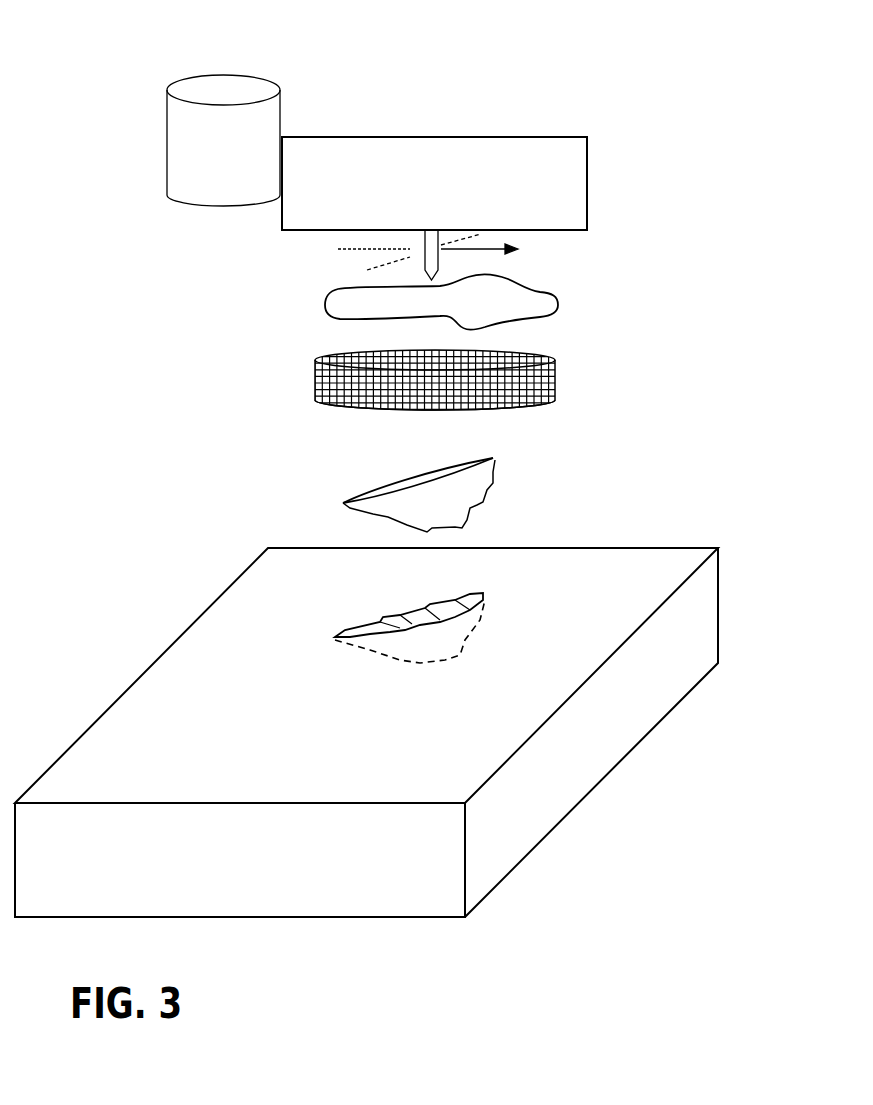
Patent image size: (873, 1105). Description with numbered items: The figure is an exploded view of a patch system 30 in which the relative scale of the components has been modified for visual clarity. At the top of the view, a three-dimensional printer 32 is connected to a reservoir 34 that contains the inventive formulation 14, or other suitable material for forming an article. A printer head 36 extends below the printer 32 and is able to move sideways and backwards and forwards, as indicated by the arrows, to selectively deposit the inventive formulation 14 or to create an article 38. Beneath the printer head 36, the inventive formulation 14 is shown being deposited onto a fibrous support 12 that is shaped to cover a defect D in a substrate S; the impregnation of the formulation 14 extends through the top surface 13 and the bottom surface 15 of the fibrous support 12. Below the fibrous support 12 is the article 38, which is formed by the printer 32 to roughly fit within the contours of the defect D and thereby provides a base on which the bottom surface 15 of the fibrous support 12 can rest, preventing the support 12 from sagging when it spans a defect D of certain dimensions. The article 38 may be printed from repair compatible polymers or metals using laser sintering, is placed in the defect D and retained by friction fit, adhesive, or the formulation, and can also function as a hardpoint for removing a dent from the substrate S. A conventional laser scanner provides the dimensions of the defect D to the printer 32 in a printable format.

The patch system 30 is at (718, 96).
The three-dimensional (3D) printer 32 is at (587, 183).
The reservoir 34 is at (167, 115).
The printer head 36 is at (413, 264).
The inventive formulation 14 is at (562, 306).
The top surface 13 is at (557, 361).
The fibrous support 12 is at (557, 380).
The bottom surface 15 is at (557, 400).
The article 38 is at (488, 492).
The defect D is at (480, 613).
The substrate S is at (720, 628).